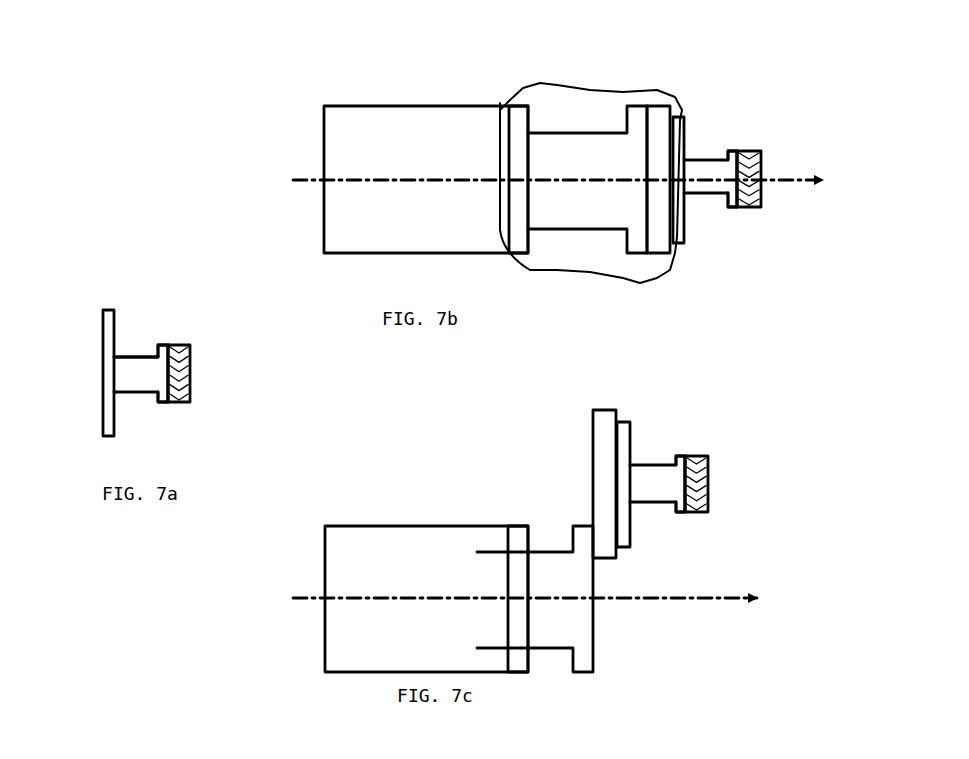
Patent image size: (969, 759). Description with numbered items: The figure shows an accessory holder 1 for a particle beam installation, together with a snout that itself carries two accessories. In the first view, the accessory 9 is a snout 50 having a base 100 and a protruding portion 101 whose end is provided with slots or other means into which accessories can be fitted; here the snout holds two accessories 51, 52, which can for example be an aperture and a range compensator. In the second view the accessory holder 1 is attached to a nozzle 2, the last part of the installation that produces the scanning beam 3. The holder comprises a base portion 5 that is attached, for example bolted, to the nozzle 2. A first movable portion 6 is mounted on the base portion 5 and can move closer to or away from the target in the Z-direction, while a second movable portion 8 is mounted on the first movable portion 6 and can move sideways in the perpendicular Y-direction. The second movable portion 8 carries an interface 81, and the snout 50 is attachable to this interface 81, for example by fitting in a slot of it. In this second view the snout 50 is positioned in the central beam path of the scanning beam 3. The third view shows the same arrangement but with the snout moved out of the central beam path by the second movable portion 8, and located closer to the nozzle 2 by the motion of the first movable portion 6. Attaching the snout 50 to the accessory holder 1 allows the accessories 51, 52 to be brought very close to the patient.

In FIG. 7b, the accessory holder 1 is at (550, 267).
In FIG. 7b, the nozzle 2 is at (324, 150).
In FIG. 7c, the nozzle 2 is at (325, 569).
In FIG. 7b, the scanning beam 3 is at (788, 186).
In FIG. 7b, the base portion 5 is at (518, 128).
In FIG. 7c, the base portion 5 is at (518, 547).
In FIG. 7b, the first movable portion 6 is at (635, 117).
In FIG. 7c, the first movable portion 6 is at (585, 535).
In FIG. 7b, the second movable portion 8 is at (657, 117).
In FIG. 7c, the second movable portion 8 is at (603, 420).
In FIG. 7b, the interface 81 is at (674, 117).
In FIG. 7c, the interface 81 is at (619, 422).
In FIG. 7a, the accessory 9 is at (140, 345).
In FIG. 7a, the snout 50 is at (133, 350).
In FIG. 7b, the snout 50 is at (713, 160).
In FIG. 7c, the snout 50 is at (658, 465).
In FIG. 7a, the accessory 51 is at (172, 350).
In FIG. 7b, the accessory 51 is at (742, 150).
In FIG. 7c, the accessory 51 is at (690, 456).
In FIG. 7a, the accessory 52 is at (186, 347).
In FIG. 7b, the accessory 52 is at (758, 151).
In FIG. 7c, the accessory 52 is at (704, 456).
In FIG. 7a, the base 100 is at (110, 410).
In FIG. 7a, the protruding portion 101 is at (133, 378).